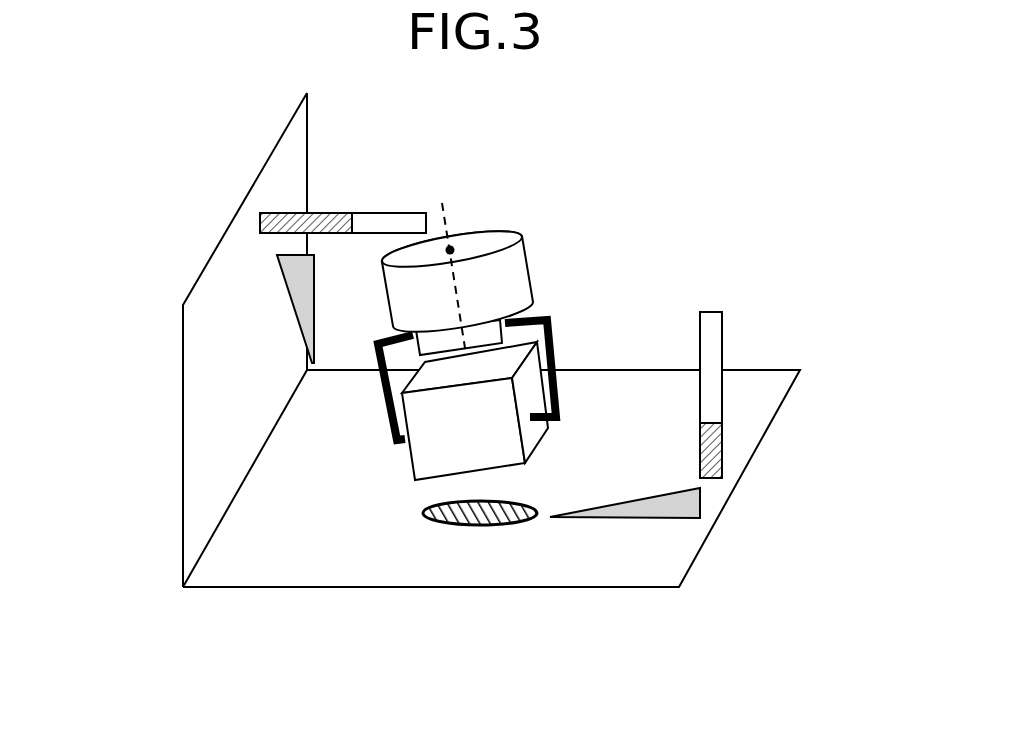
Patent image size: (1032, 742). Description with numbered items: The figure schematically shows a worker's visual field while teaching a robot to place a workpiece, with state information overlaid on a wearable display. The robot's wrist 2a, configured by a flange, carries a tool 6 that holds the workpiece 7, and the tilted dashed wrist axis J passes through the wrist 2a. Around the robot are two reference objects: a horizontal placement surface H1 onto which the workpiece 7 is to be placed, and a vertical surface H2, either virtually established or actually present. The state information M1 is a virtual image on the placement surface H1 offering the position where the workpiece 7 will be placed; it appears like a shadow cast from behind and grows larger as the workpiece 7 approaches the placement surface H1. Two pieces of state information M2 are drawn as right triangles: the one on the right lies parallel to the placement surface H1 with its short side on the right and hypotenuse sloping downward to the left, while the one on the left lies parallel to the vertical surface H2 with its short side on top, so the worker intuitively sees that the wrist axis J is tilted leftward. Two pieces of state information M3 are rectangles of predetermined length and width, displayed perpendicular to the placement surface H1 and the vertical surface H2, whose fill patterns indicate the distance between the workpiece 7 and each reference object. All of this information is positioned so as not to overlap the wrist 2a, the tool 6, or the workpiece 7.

The wrist 2a is at (530, 280).
The tool 6 is at (548, 335).
The workpiece 7 is at (539, 442).
The wrist axis J is at (448, 266).
The placement surface H1 is at (350, 588).
The vertical surface H2 is at (183, 465).
The state information M1 is at (523, 521).
The state information M2 is at (287, 300).
The state information M3 is at (330, 213).